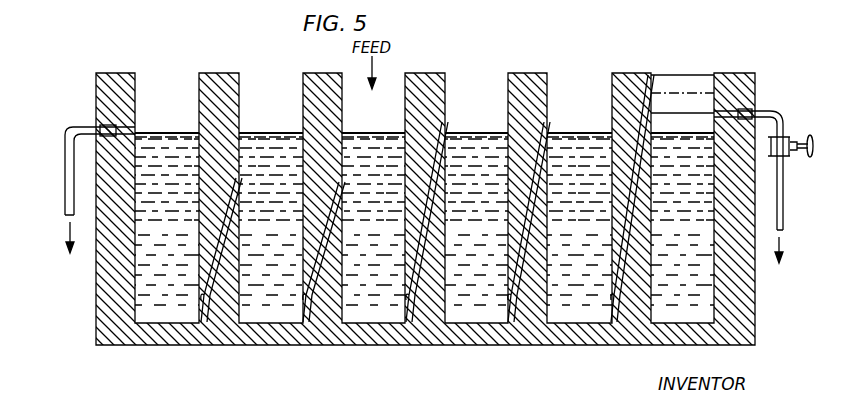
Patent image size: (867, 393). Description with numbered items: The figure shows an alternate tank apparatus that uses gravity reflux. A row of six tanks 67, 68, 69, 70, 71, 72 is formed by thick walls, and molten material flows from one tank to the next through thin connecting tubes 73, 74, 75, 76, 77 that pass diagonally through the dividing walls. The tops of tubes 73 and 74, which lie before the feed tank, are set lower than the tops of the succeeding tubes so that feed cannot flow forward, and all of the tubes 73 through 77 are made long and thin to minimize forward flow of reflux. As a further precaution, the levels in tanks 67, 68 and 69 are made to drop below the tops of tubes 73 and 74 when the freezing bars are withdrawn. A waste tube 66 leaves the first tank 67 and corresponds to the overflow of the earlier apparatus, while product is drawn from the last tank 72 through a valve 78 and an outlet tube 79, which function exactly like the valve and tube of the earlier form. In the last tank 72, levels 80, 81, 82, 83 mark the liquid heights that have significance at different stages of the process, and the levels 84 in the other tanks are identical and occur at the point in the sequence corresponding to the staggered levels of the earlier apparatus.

The waste tube 66 is at (65, 186).
The tank 67 is at (161, 323).
The tank 68 is at (261, 323).
The tank 69 is at (361, 323).
The tank 70 is at (461, 323).
The tank 71 is at (569, 323).
The tank 72 is at (666, 323).
The connecting tube 73 is at (211, 298).
The connecting tube 74 is at (316, 298).
The connecting tube 75 is at (418, 298).
The connecting tube 76 is at (520, 298).
The connecting tube 77 is at (623, 298).
The valve 78 is at (786, 137).
The outlet tube 79 is at (782, 203).
The level 80 is at (673, 124).
The level 81 is at (673, 104).
The level 82 is at (673, 84).
The level 83 is at (668, 76).
The levels 84 is at (178, 133).